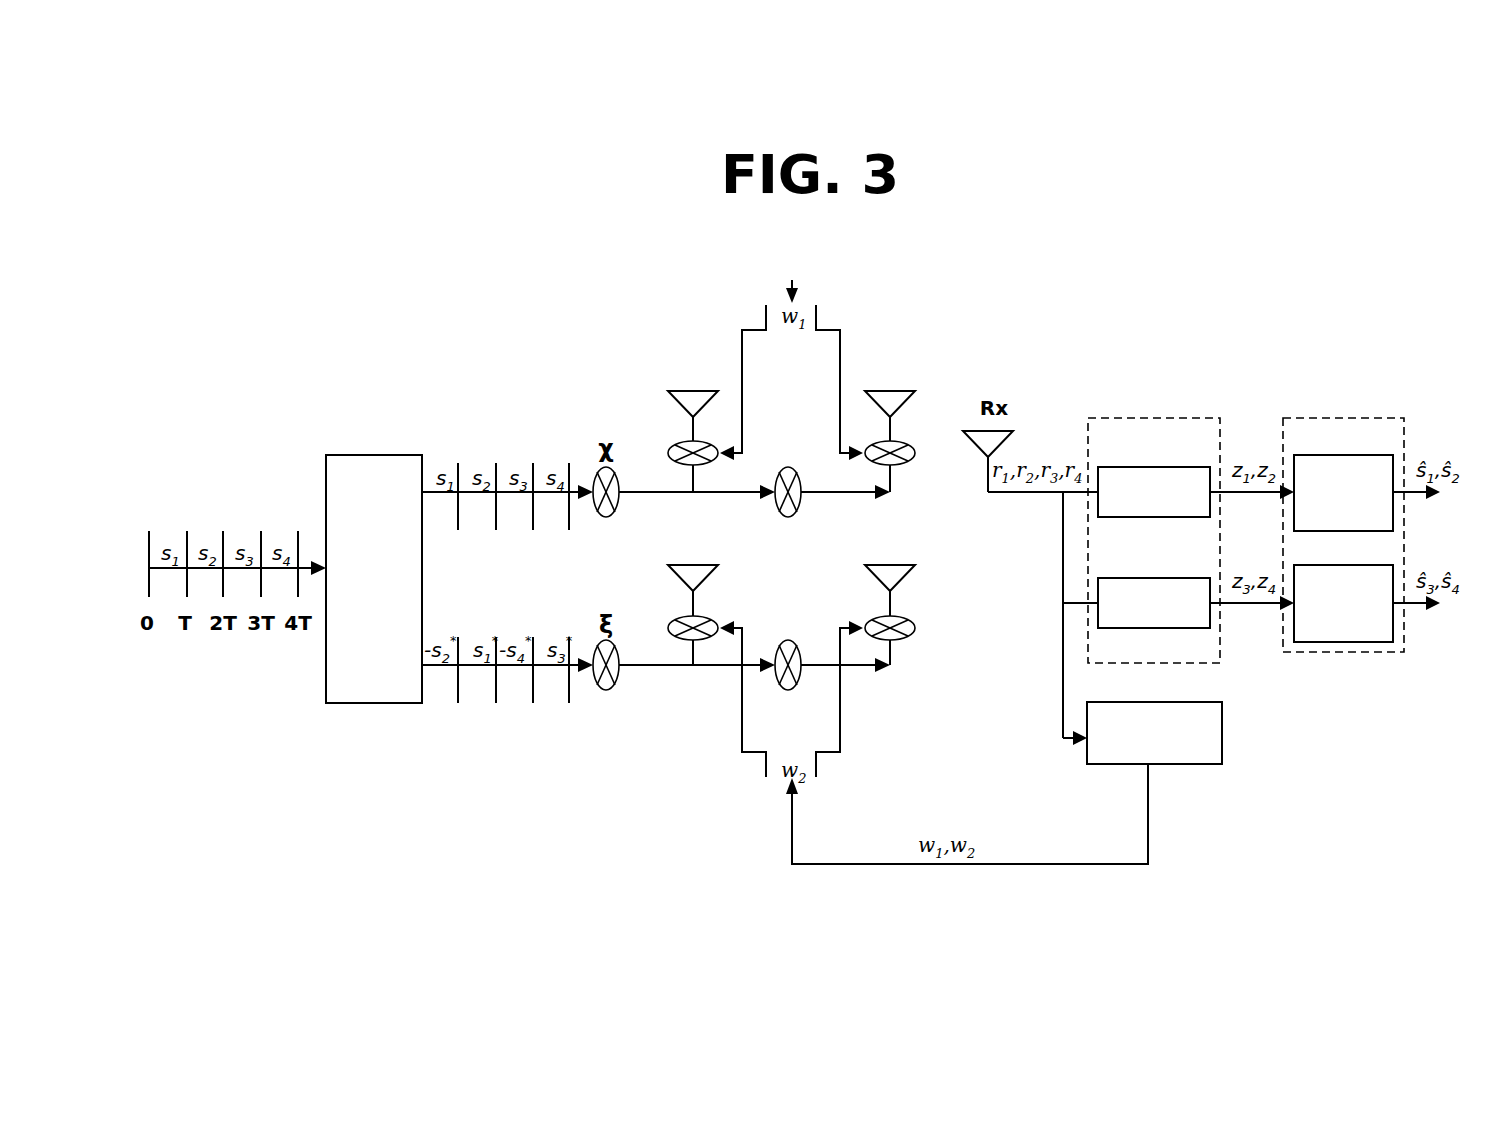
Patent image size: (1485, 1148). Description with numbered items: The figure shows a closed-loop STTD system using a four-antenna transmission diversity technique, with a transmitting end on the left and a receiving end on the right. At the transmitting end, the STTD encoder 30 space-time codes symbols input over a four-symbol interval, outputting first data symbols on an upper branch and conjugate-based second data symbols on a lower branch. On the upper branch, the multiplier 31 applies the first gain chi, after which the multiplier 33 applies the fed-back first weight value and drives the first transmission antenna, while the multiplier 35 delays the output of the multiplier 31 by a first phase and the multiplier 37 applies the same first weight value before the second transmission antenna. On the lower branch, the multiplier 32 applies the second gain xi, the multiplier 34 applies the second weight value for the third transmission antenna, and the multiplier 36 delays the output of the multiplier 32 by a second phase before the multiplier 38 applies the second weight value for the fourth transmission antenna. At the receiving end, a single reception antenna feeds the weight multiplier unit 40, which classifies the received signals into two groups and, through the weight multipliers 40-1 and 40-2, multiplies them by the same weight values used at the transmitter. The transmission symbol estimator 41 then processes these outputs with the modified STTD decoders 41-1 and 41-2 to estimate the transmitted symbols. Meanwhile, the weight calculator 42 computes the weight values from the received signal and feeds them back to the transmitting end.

The STTD encoder 30 is at (375, 455).
The multiplier 31 is at (616, 505).
The multiplier 32 is at (616, 678).
The multiplier 33 is at (668, 451).
The multiplier 34 is at (668, 626).
The multiplier 35 is at (797, 512).
The multiplier 36 is at (797, 685).
The multiplier 37 is at (906, 462).
The multiplier 38 is at (906, 637).
The weight multiplier unit 40 is at (1154, 516).
The weight multiplier 40-1 is at (1160, 467).
The weight multiplier 40-2 is at (1160, 578).
The transmission symbol estimator 41 is at (1343, 510).
The modified STTD decoder 41-1 is at (1345, 455).
The modified STTD decoder 41-2 is at (1345, 565).
The weight calculator 42 is at (1222, 740).